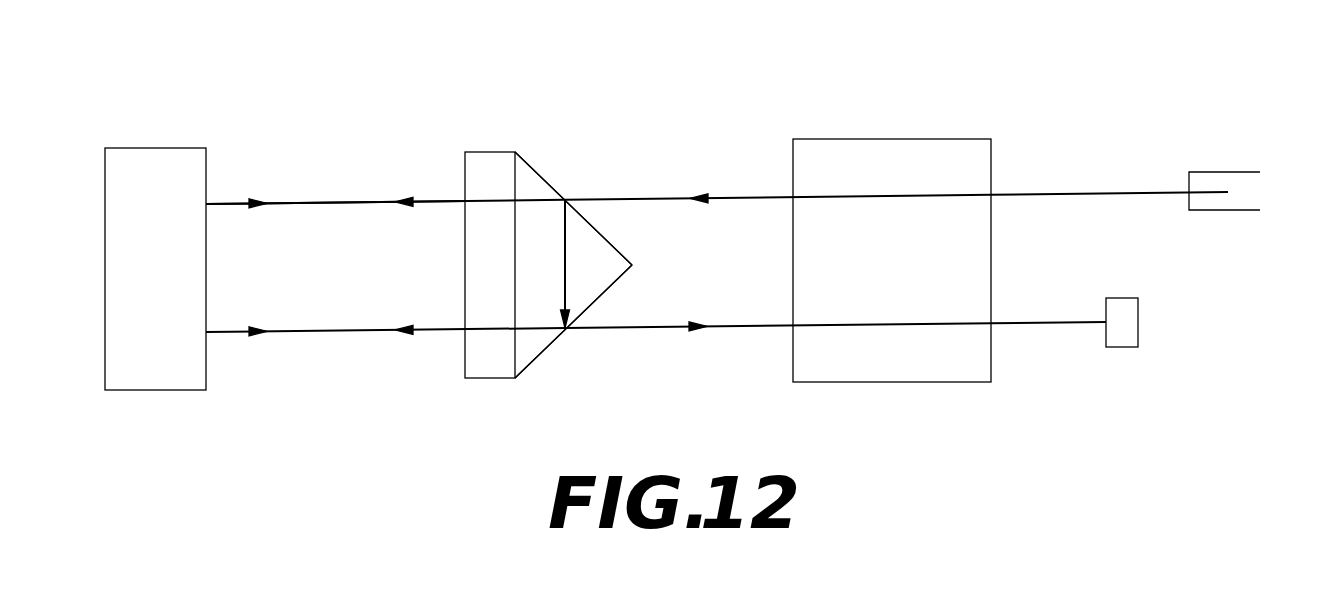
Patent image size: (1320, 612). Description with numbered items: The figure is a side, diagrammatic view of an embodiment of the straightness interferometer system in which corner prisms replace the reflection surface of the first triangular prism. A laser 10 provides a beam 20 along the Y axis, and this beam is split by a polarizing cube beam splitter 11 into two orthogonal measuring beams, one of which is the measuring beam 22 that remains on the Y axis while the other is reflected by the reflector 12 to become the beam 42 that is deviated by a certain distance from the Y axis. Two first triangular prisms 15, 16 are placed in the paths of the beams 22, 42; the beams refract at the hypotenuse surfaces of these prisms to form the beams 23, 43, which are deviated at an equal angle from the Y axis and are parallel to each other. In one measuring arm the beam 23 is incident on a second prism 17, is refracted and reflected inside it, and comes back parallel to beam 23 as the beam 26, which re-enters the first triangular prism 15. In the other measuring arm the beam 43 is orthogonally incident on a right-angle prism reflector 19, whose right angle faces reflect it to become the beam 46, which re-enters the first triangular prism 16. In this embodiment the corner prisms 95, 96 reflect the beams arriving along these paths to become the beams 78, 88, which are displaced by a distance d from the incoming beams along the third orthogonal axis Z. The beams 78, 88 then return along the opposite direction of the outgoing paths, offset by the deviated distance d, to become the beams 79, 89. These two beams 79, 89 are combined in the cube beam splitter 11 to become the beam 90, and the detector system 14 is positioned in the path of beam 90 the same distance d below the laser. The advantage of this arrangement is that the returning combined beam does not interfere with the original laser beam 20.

The laser 10 is at (1230, 172).
The beam 20 is at (1049, 192).
The polarizing cube beam splitter 11 is at (894, 233).
The reflector 12 is at (889, 139).
The detector system 14 is at (1140, 313).
The first triangular prism 15 is at (508, 229).
The first triangular prism 16 is at (488, 152).
The second prism 17 is at (134, 237).
The right-angle prism reflector 19 is at (166, 148).
The corner prism 95 is at (538, 172).
The corner prism 96 is at (533, 361).
The beam 46 is at (385, 169).
The beam 43 is at (292, 203).
The beam 26 is at (335, 231).
The beam 23 is at (372, 206).
The beam 42 is at (778, 173).
The measuring beam 22 is at (654, 197).
The beam 78 is at (385, 366).
The beam 88 is at (330, 334).
The beam 79 is at (778, 365).
The beam 89 is at (662, 334).
The beam 90 is at (1062, 326).